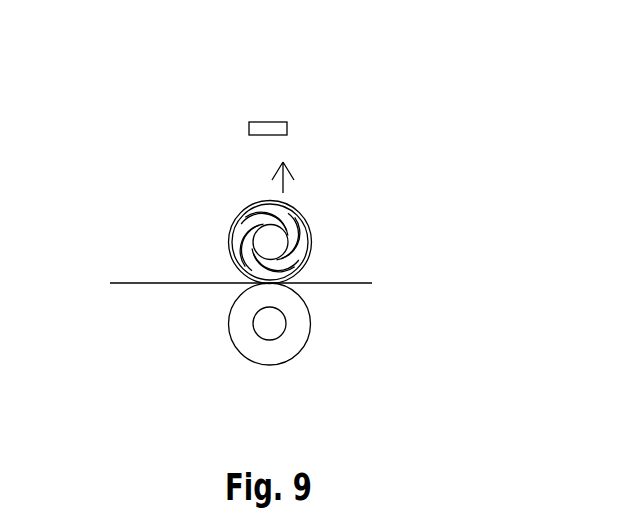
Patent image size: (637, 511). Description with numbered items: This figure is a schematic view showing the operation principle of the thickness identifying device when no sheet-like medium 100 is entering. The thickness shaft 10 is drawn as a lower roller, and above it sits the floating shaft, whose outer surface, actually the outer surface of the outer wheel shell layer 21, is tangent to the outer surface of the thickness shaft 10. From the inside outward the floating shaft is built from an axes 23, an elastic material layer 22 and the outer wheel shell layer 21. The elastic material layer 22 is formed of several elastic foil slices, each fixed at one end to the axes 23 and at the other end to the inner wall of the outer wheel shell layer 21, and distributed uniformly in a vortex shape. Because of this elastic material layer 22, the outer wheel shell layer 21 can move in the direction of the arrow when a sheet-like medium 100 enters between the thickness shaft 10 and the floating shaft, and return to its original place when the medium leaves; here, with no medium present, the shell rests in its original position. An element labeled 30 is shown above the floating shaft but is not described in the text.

The sheet-like medium 100 is at (140, 284).
The thickness shaft 10 is at (288, 355).
The outer wheel shell layer 21 is at (292, 193).
The elastic material layer 22 is at (298, 223).
The axes 23 is at (275, 245).
The sensor / nozzle 30 is at (267, 122).